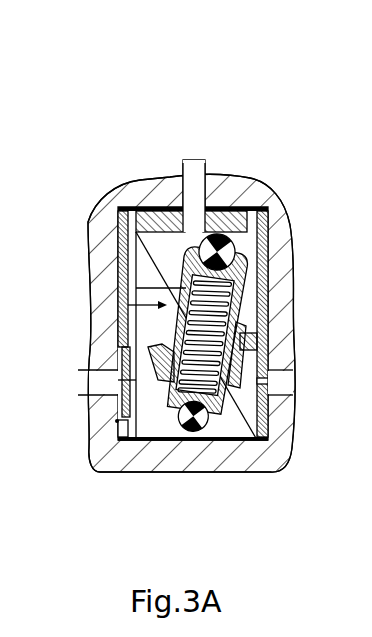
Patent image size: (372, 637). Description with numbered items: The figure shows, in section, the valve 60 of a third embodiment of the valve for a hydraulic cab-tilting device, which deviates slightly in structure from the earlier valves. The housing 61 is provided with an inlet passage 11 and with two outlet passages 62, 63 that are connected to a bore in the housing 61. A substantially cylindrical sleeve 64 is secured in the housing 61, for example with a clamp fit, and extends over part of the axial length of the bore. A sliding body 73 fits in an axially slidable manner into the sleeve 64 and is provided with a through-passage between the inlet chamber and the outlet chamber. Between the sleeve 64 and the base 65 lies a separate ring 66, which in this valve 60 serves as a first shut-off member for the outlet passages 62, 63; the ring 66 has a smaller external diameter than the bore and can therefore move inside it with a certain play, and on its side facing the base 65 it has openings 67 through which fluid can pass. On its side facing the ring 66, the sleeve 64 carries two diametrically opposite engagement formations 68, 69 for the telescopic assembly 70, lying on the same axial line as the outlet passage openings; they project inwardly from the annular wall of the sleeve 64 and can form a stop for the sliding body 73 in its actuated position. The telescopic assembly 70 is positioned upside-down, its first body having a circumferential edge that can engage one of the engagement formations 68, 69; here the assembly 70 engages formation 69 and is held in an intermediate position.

The valve 60 is at (152, 110).
The inlet passage 11 is at (192, 187).
The housing 61 is at (233, 193).
The sleeve 64 is at (118, 245).
The sliding body 73 is at (268, 213).
The telescopic assembly 70 is at (118, 306).
The engagement formation 68 is at (118, 331).
The outlet passage 62 is at (107, 380).
The engagement formation 69 is at (272, 345).
The outlet passage 63 is at (277, 385).
The ring 66 is at (117, 421).
The base 65 is at (148, 455).
The openings 67 is at (245, 442).